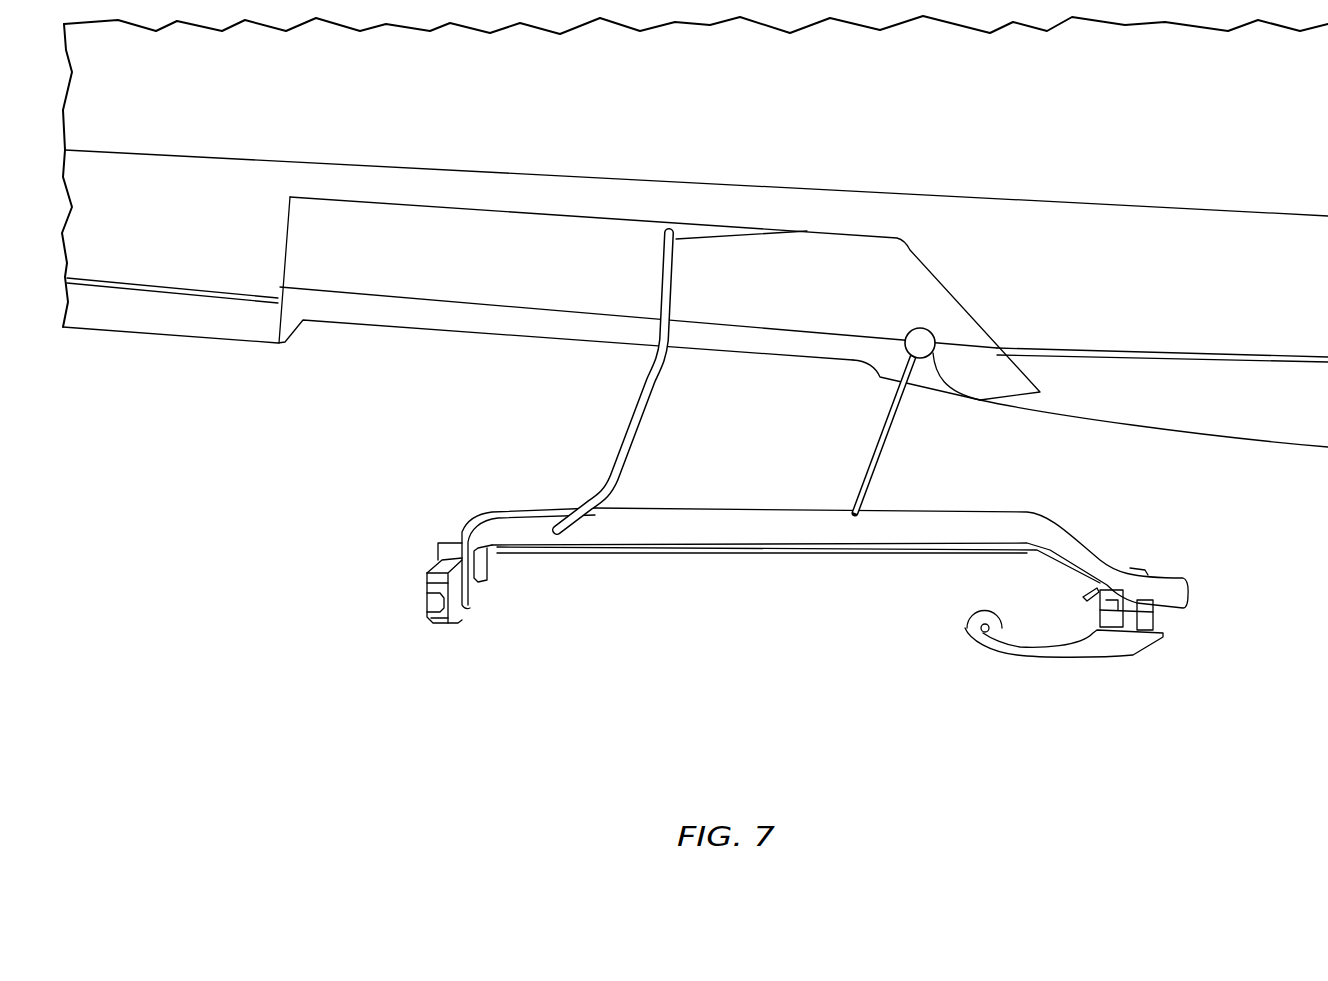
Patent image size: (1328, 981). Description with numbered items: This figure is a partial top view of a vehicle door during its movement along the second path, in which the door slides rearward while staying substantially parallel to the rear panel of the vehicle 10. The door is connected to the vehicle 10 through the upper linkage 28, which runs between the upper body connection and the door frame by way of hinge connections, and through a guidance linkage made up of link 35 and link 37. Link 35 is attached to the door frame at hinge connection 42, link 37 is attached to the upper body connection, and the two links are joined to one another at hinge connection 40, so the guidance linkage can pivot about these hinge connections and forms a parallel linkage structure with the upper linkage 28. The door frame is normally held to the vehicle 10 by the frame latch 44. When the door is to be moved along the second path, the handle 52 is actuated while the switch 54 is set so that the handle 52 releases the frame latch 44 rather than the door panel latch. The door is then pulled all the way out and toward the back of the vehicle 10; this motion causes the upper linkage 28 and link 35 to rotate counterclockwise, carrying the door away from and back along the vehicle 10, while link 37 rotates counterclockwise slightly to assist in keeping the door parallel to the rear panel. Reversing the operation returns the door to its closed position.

The vehicle 10 is at (228, 328).
The upper linkage 28 is at (890, 442).
The link 35 is at (640, 413).
The link 37 is at (718, 235).
The hinge connection 40 is at (630, 245).
The hinge connection 42 is at (555, 522).
The frame latch 44 is at (437, 618).
The handle 52 is at (1048, 660).
The switch 54 is at (1090, 592).